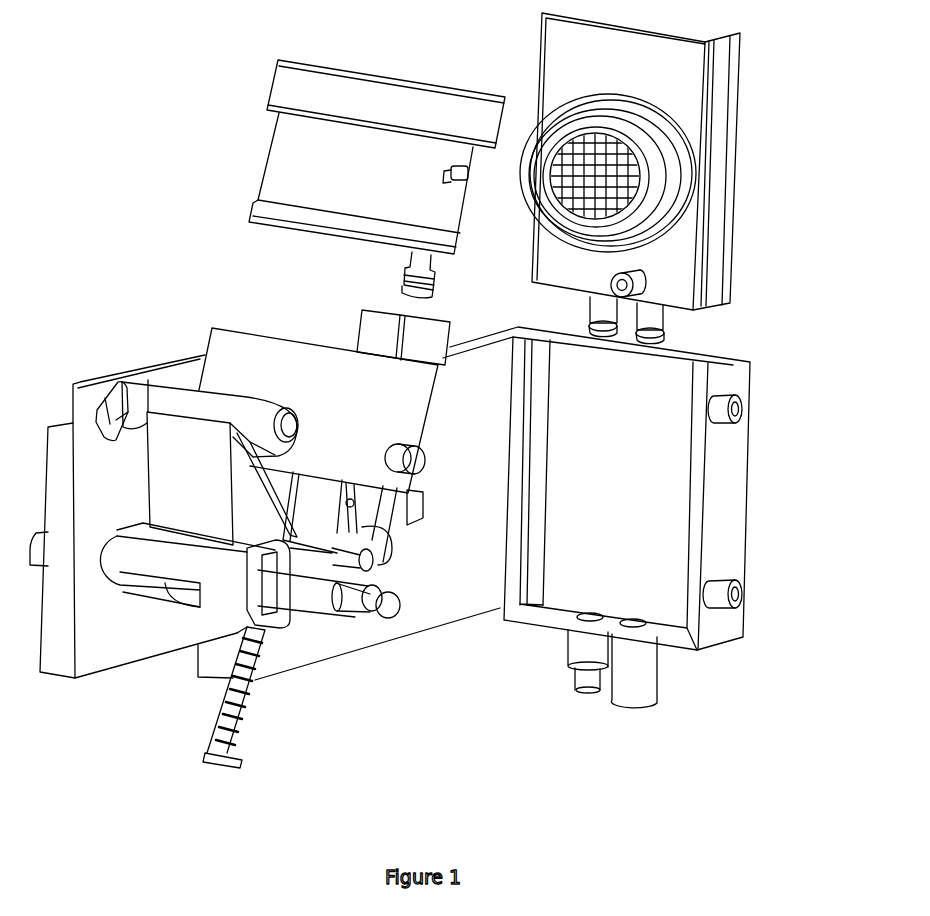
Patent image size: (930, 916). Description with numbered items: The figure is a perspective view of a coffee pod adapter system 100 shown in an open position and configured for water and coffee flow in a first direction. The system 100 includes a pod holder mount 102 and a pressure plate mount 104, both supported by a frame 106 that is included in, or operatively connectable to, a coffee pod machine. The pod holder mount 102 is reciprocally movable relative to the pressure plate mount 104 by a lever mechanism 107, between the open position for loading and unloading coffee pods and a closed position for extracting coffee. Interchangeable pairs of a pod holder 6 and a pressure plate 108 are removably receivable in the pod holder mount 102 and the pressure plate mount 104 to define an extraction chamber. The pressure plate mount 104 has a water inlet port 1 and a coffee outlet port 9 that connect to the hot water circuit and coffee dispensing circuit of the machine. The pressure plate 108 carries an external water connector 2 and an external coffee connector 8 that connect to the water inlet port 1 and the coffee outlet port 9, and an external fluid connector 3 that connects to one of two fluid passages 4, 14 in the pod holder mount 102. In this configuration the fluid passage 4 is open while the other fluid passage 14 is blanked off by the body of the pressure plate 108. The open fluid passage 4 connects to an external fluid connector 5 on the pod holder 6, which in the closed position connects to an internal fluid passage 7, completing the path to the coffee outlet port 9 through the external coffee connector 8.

The water inlet port 1 is at (653, 705).
The external water connector 2 is at (668, 338).
The external fluid connector 3 is at (661, 285).
The fluid passage 4 is at (446, 323).
The external fluid connector 5 is at (396, 282).
The pod holder 6 is at (384, 72).
The internal fluid passage 7 is at (549, 186).
The external coffee connector 8 is at (607, 338).
The coffee outlet port 9 is at (578, 693).
The fluid passage 14 is at (388, 305).
The coffee pod adapter system 100 is at (186, 105).
The pod holder mount 102 is at (209, 343).
The pressure plate mount 104 is at (746, 520).
The frame 106 is at (408, 638).
The lever mechanism 107 is at (108, 405).
The pressure plate 108 is at (737, 134).